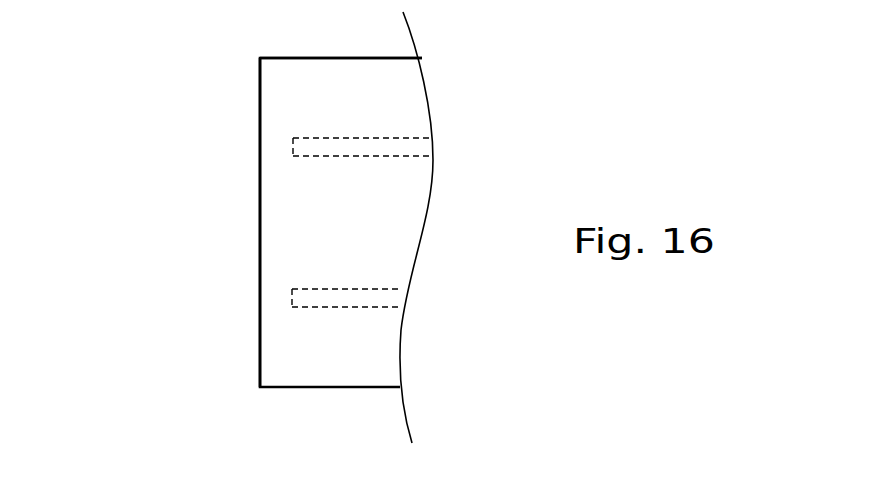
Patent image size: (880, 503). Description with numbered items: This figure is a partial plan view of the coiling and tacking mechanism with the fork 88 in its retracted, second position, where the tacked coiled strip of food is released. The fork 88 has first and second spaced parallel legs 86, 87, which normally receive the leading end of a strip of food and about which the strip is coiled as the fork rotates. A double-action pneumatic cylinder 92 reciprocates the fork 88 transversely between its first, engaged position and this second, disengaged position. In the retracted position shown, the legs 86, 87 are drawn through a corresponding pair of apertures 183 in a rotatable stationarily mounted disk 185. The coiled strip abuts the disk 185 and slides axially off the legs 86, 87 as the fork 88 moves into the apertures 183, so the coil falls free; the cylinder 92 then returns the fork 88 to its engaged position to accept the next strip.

The fork 88 is at (216, 209).
The rotatable stationarily mounted disk 185 is at (260, 95).
The apertures 183 is at (260, 165).
The first leg 86 is at (355, 147).
The second leg 87 is at (323, 299).
The double-action pneumatic cylinder 92 is at (368, 388).